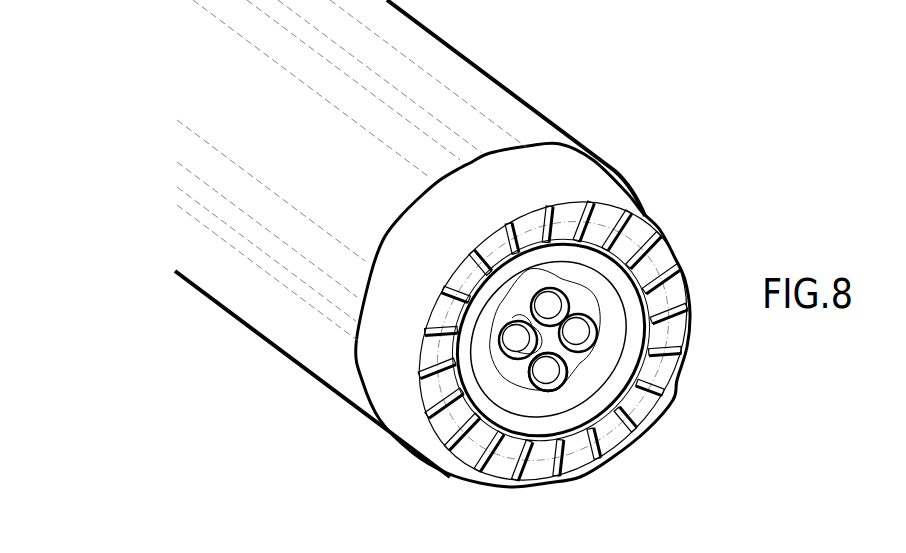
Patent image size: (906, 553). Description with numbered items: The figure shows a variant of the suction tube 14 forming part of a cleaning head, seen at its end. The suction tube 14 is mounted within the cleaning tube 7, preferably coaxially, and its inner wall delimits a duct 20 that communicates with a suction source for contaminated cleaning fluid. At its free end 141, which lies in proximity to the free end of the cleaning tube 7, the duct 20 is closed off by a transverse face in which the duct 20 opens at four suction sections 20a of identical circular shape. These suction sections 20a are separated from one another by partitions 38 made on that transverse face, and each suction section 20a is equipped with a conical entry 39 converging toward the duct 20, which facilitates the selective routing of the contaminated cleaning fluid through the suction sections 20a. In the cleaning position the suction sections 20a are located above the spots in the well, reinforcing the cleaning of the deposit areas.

The cleaning tube 7 is at (483, 105).
The duct 20 is at (313, 223).
The suction tube 14 is at (600, 285).
The free end of the suction tube 141 is at (608, 335).
The partitions 38 is at (583, 374).
The conical entry 39 is at (527, 363).
The suction sections 20a is at (543, 376).